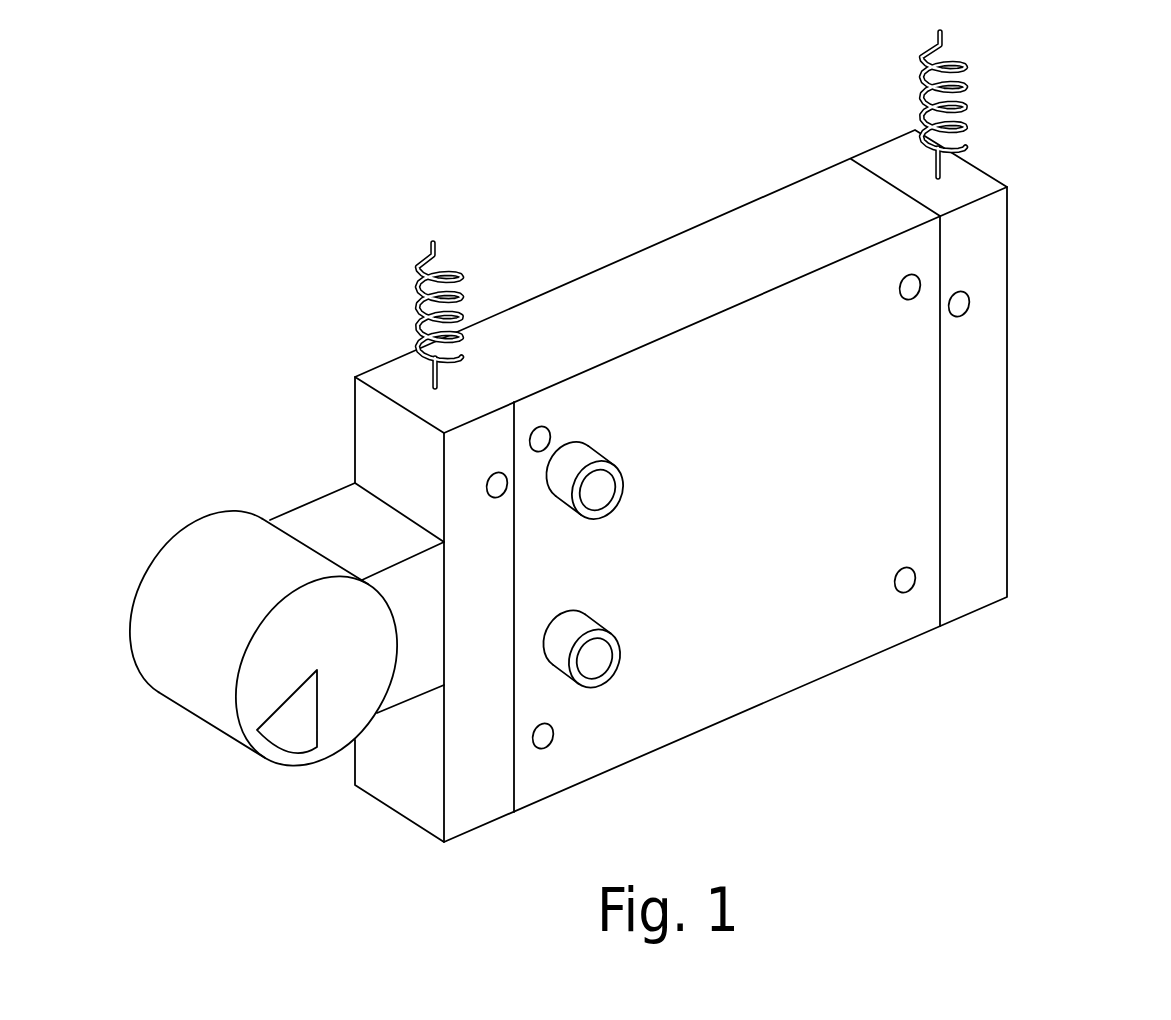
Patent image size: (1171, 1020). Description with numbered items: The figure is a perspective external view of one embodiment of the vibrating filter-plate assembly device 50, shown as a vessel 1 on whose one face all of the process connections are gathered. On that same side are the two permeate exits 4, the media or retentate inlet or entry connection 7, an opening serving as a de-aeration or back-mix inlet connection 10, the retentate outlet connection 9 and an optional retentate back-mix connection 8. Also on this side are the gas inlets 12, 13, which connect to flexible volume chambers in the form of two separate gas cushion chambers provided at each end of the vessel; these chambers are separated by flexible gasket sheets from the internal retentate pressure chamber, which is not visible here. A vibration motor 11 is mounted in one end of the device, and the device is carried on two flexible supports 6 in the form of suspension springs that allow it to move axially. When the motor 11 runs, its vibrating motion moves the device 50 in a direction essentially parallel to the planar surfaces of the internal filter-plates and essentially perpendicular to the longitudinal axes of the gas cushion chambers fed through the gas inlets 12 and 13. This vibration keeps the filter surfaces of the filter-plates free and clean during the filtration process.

The vibrating filter-plate assembly device 50 is at (732, 207).
The main body 1 is at (992, 248).
The permeate exits 4 is at (597, 490).
The flexible supports 6 is at (458, 273).
The media or retentate inlet connection 7 is at (543, 422).
The retentate back-mix connection 8 is at (549, 740).
The retentate outlet connection 9 is at (903, 582).
The de-aeration or back-mix inlet connection 10 is at (902, 278).
The vibration motor 11 is at (245, 535).
The gas inlet 12 is at (973, 300).
The gas inlet 13 is at (485, 478).